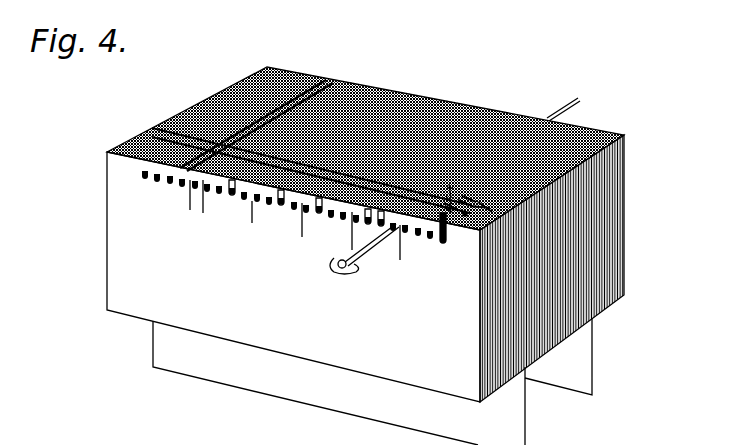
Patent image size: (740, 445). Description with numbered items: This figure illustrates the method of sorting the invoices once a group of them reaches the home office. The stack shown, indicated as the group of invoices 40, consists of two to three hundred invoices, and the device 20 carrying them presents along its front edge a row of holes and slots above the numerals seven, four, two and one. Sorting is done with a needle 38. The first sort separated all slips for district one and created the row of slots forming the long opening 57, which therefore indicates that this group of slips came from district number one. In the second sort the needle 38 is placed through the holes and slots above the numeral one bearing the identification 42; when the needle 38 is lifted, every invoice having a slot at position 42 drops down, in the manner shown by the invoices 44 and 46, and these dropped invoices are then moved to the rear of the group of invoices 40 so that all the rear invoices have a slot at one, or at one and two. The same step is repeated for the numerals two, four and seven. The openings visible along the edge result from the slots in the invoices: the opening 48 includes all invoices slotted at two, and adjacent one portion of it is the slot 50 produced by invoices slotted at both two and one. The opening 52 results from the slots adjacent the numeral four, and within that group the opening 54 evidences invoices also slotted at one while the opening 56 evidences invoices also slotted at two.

The recording device 20 is at (132, 305).
The needle 38 is at (563, 105).
The group of invoices 40 is at (626, 172).
The slot position identification 1 42 is at (449, 250).
The dropped invoice 44 is at (525, 440).
The dropped invoice 46 is at (592, 362).
The opening 48 is at (443, 208).
The slot 50 is at (465, 215).
The opening 52 is at (447, 200).
The opening 54 is at (492, 208).
The opening 56 is at (470, 205).
The long opening 57 is at (178, 126).